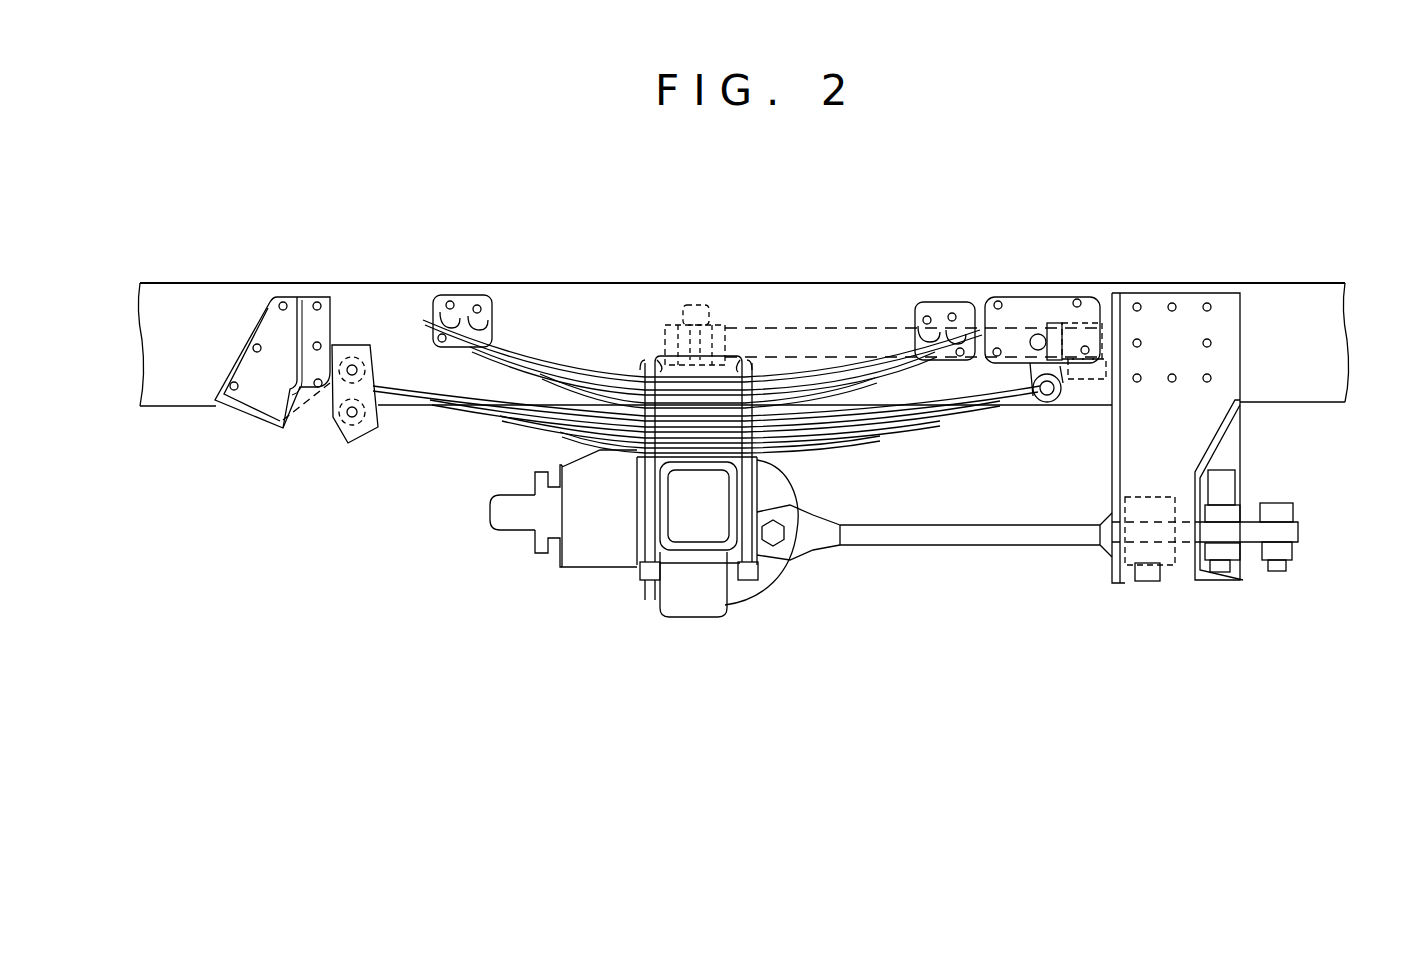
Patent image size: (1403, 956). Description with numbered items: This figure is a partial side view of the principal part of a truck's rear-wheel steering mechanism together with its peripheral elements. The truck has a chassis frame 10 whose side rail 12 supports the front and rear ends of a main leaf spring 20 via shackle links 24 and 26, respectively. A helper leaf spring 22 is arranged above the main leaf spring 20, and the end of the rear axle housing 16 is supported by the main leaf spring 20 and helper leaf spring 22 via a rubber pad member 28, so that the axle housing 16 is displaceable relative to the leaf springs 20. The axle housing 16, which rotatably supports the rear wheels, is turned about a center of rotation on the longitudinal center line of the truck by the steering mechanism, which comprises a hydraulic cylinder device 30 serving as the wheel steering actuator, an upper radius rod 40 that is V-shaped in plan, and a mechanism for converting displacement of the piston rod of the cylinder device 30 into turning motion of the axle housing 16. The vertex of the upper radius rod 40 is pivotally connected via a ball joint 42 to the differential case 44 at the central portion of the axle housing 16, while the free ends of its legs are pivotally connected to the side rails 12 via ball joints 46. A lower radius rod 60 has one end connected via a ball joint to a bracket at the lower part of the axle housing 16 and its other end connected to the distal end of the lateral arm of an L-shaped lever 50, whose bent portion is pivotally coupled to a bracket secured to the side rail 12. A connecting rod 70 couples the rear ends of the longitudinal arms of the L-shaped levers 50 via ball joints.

The chassis frame 10 is at (212, 268).
The side rail 12 is at (180, 398).
The rear axle housing 16 is at (688, 511).
The main leaf spring 20 is at (450, 420).
The helper leaf spring 22 is at (528, 352).
The shackle link 24 is at (343, 438).
The shackle link 26 is at (1030, 372).
The rubber pad member 28 is at (686, 555).
The hydraulic cylinder device 30 is at (1245, 548).
The upper radius rod 40 is at (814, 345).
The ball joint 42 is at (685, 360).
The differential case 44 is at (745, 600).
The ball joint 46 is at (1085, 375).
The L-shaped lever 50 is at (1300, 532).
The lower radius rod 60 is at (962, 540).
The connecting rod 70 is at (1285, 505).